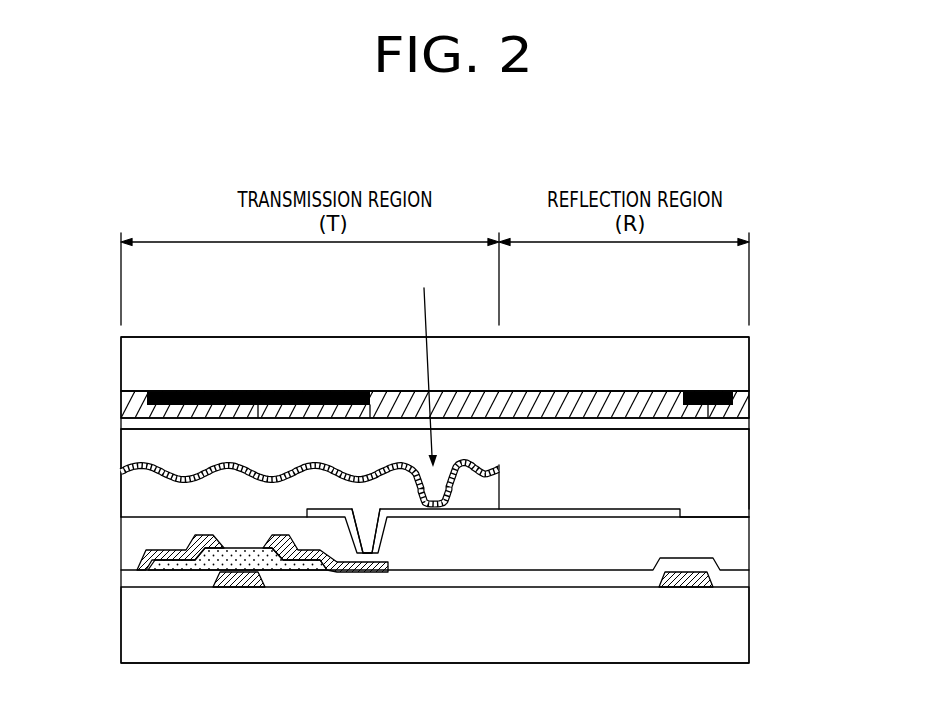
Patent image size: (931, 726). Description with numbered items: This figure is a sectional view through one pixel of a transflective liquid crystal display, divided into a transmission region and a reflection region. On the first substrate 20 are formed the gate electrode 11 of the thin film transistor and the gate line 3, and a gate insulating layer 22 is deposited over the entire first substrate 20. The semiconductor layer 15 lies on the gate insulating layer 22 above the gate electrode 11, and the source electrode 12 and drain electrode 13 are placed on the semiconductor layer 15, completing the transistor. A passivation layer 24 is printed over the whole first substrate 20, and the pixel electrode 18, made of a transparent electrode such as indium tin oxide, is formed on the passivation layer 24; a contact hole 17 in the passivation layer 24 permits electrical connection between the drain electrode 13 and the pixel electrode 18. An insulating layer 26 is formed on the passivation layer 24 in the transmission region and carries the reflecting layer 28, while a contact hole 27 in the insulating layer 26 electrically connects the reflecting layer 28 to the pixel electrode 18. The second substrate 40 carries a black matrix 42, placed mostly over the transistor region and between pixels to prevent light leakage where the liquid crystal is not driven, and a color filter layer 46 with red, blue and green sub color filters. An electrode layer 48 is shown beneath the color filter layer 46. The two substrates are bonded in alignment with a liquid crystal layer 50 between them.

The gate line 3 is at (680, 588).
The gate electrode 11 is at (236, 588).
The source electrode 12 is at (138, 572).
The drain electrode 13 is at (345, 573).
The semiconductor layer 15 is at (181, 566).
The contact hole 17 is at (367, 516).
The pixel electrode 18 is at (513, 510).
The first substrate 20 is at (737, 632).
The gate insulating layer 22 is at (737, 578).
The passivation layer 24 is at (593, 548).
The insulating layer 26 is at (125, 493).
The contact hole 27 is at (423, 365).
The reflecting layer 28 is at (207, 467).
The second substrate 40 is at (738, 363).
The black matrix 42 is at (314, 391).
The color filter layer 46 is at (479, 391).
The common electrode 48 is at (593, 429).
The liquid crystal layer 50 is at (738, 467).